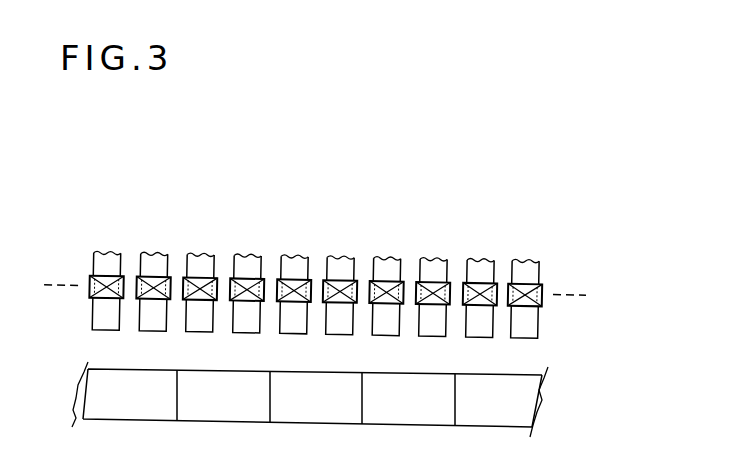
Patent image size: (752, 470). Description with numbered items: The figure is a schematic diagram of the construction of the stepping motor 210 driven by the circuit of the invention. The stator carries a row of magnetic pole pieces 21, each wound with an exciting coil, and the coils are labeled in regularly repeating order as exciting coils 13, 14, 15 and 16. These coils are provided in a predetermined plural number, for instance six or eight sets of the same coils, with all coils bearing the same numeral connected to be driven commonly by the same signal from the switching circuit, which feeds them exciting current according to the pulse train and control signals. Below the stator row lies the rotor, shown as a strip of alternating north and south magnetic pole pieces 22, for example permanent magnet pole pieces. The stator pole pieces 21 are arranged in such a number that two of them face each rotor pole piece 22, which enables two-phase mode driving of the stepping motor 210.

The exciting coil 13 is at (89, 292).
The exciting coil 14 is at (150, 298).
The exciting coil 15 is at (196, 298).
The exciting coil 16 is at (243, 298).
The magnetic pole piece of the stator 21 is at (345, 311).
The stepping motor 210 is at (545, 293).
The magnetic pole piece of the rotor 22 is at (530, 395).